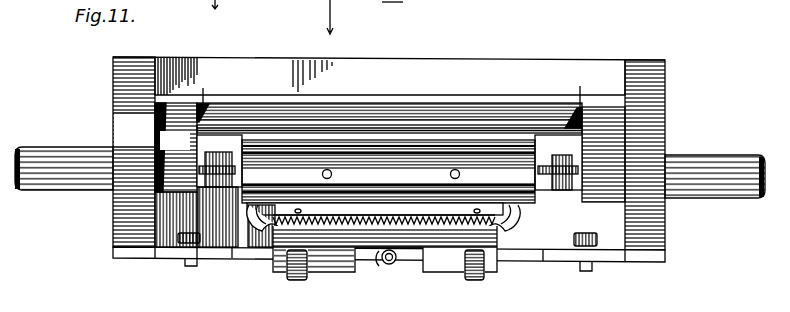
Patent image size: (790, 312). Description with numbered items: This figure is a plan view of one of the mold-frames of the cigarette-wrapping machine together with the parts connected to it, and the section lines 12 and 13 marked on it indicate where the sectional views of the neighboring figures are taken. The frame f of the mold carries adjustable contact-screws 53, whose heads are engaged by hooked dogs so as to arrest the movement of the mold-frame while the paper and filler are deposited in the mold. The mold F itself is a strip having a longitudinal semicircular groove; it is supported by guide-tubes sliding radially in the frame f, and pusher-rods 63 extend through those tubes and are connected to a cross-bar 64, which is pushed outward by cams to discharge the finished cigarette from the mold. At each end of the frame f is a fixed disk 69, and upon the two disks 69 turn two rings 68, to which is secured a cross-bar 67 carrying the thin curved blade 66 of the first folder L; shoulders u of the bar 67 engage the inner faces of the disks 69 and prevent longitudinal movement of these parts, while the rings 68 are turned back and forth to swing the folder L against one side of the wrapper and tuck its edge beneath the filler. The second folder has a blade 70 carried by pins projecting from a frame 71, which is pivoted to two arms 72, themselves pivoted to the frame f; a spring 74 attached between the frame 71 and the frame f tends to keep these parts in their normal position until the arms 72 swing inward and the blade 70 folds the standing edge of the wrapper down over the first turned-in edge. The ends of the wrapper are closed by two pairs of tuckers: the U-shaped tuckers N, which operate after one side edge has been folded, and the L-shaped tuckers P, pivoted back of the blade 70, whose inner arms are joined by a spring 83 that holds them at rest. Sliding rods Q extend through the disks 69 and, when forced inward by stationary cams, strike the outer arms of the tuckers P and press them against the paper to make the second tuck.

The section line 12 is at (329, 28).
The section line 13 is at (219, 14).
The cross-bar 64 is at (406, 9).
The rings 68 is at (114, 96).
The fixed disks 69 is at (618, 53).
The curved blade 66 is at (280, 115).
The cross-bar 67 is at (487, 101).
The pusher-rods 63 is at (322, 174).
The blade 70 is at (403, 208).
The spring 83 is at (357, 223).
The frame 71 is at (385, 249).
The arms 72 is at (293, 281).
The spring 74 is at (383, 271).
The contact-screws 53 is at (192, 264).
The sliding rods Q is at (735, 145).
The shoulders u is at (391, 88).
The folder L is at (382, 100).
The tuckers N is at (552, 153).
The mold F is at (388, 171).
The tuckers P is at (236, 217).
The mold-frame f is at (168, 232).